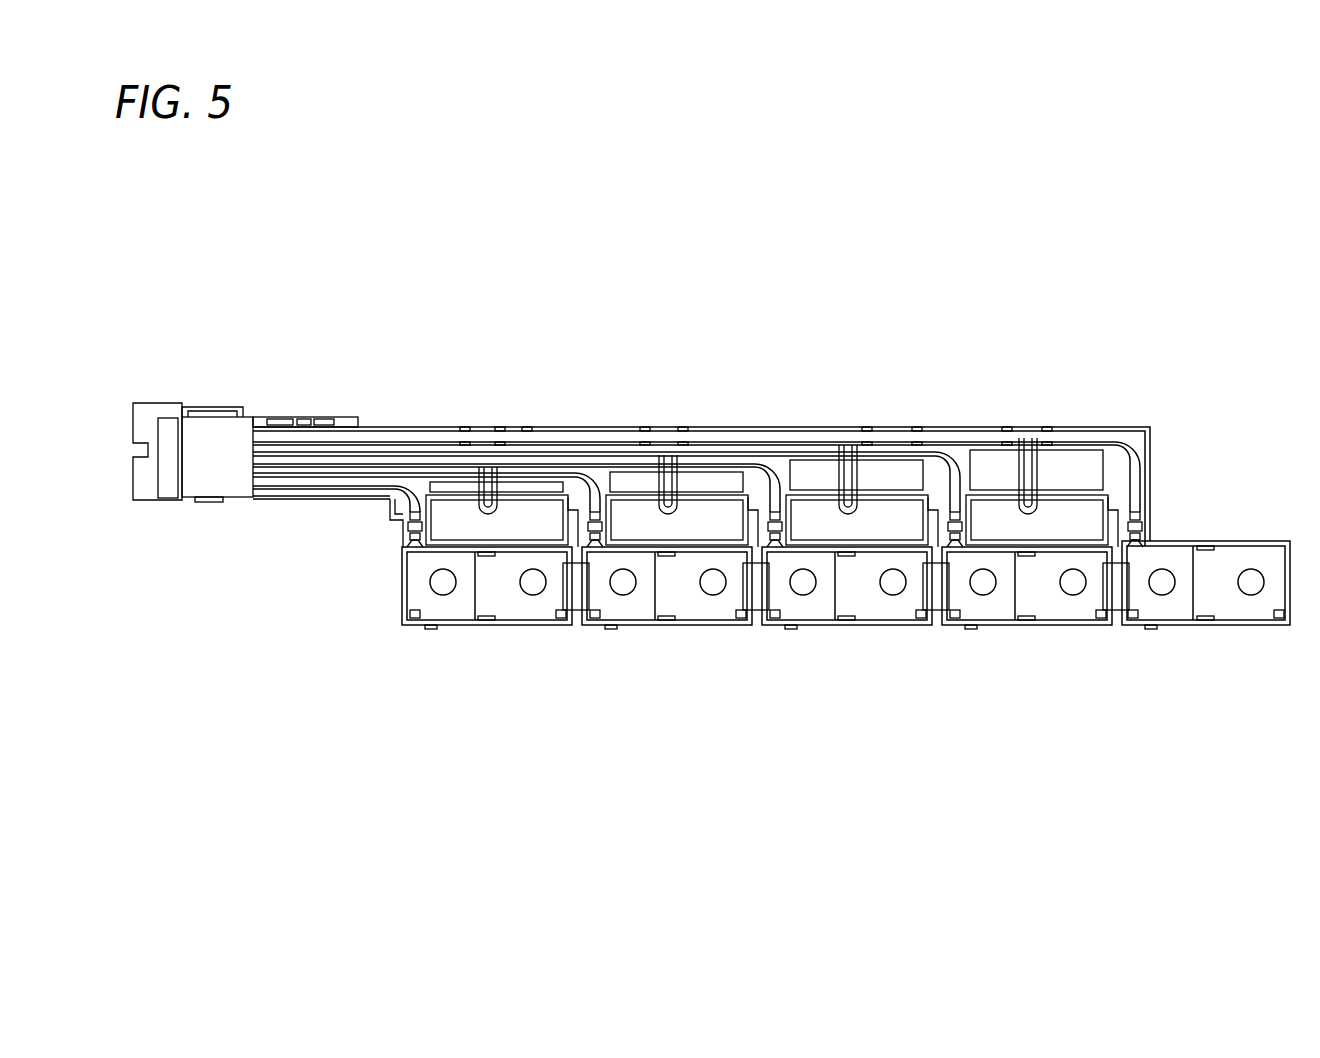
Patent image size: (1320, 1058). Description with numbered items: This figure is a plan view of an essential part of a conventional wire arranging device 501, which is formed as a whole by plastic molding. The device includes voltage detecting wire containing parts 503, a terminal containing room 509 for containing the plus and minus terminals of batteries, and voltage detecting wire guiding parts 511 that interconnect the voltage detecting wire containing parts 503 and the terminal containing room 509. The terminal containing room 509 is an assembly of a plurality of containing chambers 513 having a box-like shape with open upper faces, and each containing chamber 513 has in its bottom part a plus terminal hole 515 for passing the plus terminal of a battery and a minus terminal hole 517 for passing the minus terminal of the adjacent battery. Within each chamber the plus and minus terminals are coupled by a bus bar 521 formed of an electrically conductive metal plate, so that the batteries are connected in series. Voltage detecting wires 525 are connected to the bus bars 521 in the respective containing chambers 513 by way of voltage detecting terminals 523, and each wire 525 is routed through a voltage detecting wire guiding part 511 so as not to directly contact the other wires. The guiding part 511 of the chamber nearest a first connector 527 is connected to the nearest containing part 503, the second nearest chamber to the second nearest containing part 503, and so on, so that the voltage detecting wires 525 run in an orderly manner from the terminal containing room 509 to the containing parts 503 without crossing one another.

The wire arranging device 501 is at (443, 268).
The voltage detecting wire containing parts 503 is at (389, 447).
The terminal containing room 509 is at (375, 777).
The voltage detecting wire guiding parts 511 is at (402, 522).
The containing chambers 513 is at (485, 604).
The plus terminal hole 515 is at (572, 535).
The minus terminal hole 517 is at (395, 527).
The bus bar 521 is at (528, 592).
The voltage detecting terminals 523 is at (451, 612).
The voltage detecting wires 525 is at (777, 460).
The first connector 527 is at (147, 420).